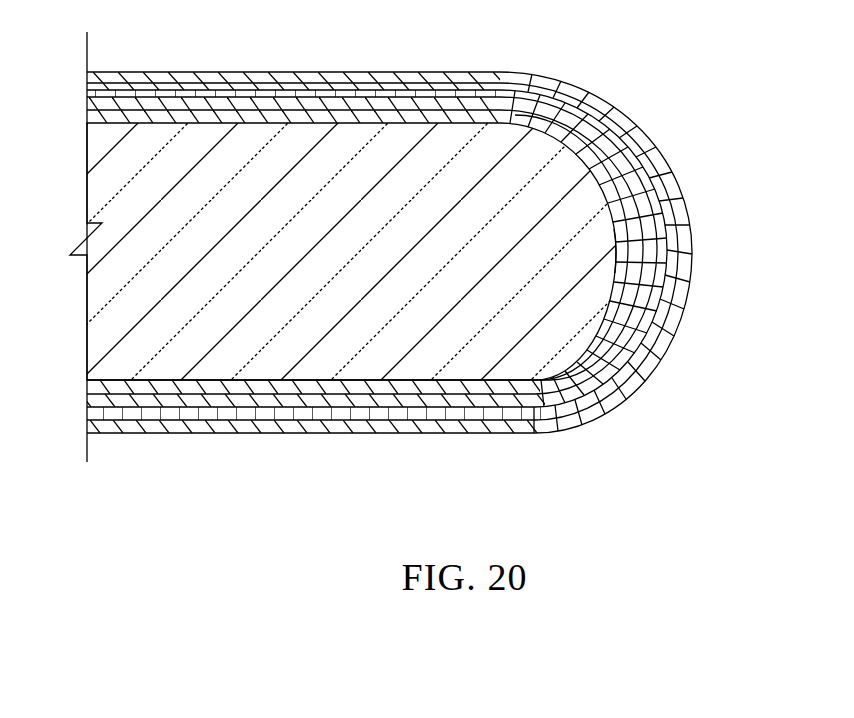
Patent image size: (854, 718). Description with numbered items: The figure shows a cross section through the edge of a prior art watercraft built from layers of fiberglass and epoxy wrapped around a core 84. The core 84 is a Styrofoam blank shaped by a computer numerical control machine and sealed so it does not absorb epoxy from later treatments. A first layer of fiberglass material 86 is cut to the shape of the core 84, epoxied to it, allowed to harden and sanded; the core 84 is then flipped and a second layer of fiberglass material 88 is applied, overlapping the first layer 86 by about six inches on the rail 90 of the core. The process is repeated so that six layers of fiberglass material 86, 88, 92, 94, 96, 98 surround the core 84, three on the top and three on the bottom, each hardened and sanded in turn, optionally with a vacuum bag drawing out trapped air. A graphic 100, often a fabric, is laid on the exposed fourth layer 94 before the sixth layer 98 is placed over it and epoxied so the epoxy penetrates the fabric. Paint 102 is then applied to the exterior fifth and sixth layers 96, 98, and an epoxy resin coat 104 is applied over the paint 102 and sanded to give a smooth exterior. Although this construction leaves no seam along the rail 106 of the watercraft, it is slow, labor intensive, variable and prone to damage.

The core 84 is at (322, 263).
The first layer of fiberglass material 86 is at (377, 102).
The second layer of fiberglass material 88 is at (234, 390).
The rail 90 is at (604, 251).
The third layer of fiberglass material 92 is at (322, 87).
The fourth layer of fiberglass material 94 is at (290, 400).
The fifth layer of fiberglass material 96 is at (225, 80).
The sixth layer of fiberglass material 98 is at (363, 413).
The graphic 100 is at (272, 92).
The paint 102 is at (665, 163).
The epoxy resin coat 104 is at (575, 415).
The rail 106 is at (690, 375).